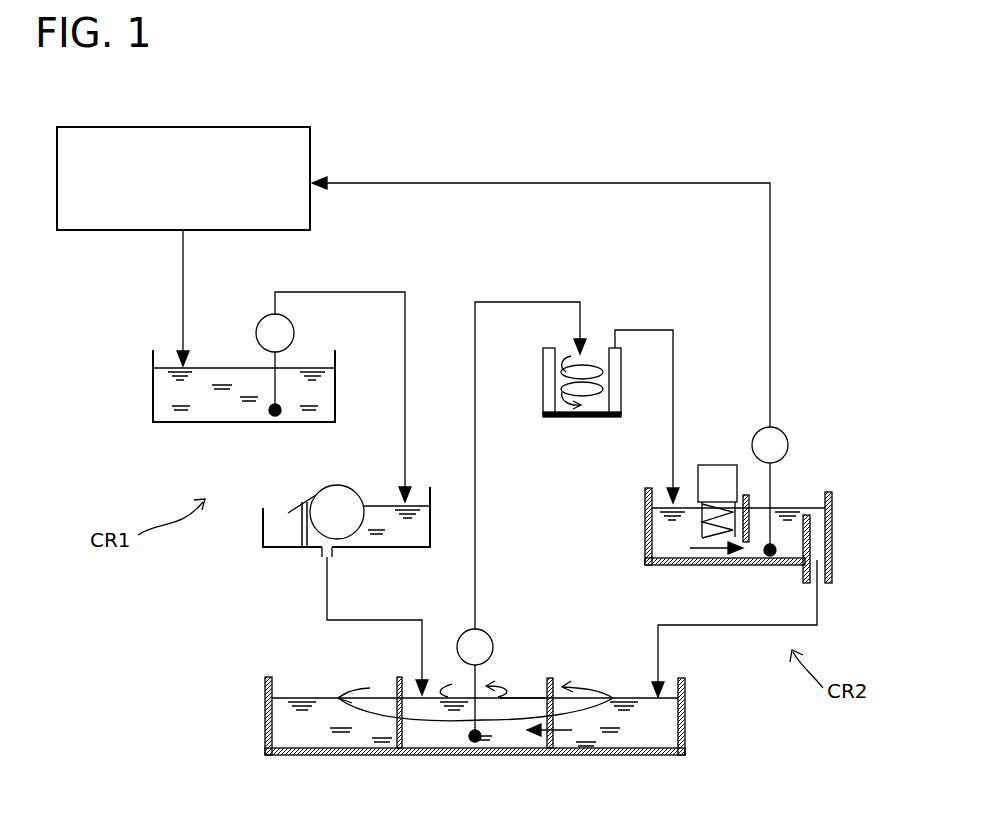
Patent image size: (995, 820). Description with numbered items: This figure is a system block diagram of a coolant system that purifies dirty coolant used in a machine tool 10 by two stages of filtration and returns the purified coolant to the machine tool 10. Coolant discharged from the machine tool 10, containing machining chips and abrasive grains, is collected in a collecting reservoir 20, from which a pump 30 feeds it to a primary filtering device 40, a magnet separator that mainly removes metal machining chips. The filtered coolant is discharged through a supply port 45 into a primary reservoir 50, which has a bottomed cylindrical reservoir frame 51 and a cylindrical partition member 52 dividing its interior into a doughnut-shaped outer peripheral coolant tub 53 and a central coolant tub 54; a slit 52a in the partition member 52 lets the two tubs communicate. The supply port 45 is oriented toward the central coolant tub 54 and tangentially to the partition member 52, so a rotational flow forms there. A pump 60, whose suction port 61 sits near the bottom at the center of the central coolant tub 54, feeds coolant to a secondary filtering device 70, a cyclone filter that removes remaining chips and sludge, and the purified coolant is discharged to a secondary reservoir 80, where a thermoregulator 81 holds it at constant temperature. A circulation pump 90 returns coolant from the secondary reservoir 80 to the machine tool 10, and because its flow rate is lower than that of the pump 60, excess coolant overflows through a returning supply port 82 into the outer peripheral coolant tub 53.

The machine tool 10 is at (266, 127).
The collecting reservoir 20 is at (168, 346).
The pump 30 is at (268, 317).
The primary filtering device 40 is at (297, 485).
The supply port 45 is at (418, 676).
The primary reservoir 50 is at (438, 701).
The reservoir frame 51 is at (264, 733).
The partition member 52 is at (551, 678).
The slit 52a is at (554, 742).
The outer peripheral coolant tub 53 is at (313, 697).
The central coolant tub 54 is at (521, 697).
The pump 60 is at (486, 630).
The suction port 61 is at (481, 741).
The secondary filtering device 70 is at (605, 325).
The secondary reservoir 80 is at (746, 474).
The thermoregulator 81 is at (717, 465).
The returning supply port 82 is at (660, 667).
The circulation pump 90 is at (780, 428).